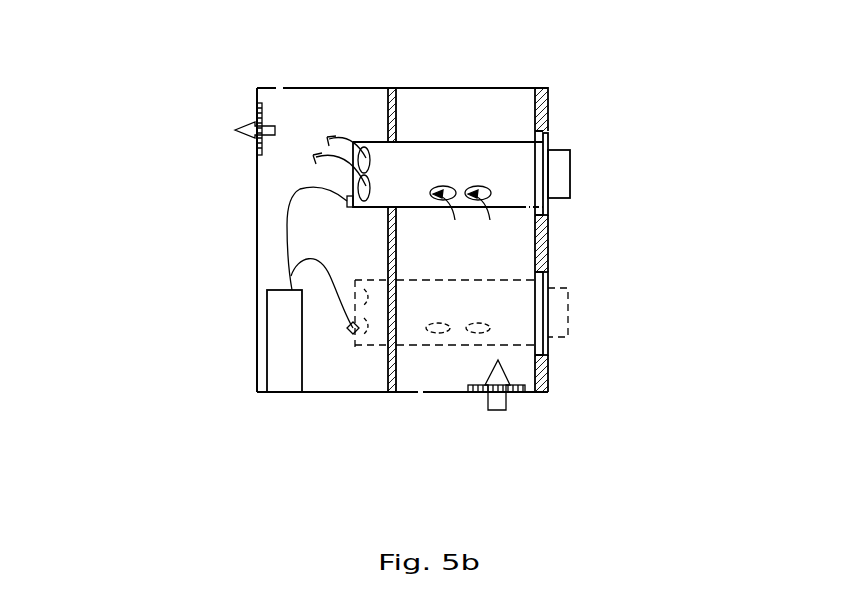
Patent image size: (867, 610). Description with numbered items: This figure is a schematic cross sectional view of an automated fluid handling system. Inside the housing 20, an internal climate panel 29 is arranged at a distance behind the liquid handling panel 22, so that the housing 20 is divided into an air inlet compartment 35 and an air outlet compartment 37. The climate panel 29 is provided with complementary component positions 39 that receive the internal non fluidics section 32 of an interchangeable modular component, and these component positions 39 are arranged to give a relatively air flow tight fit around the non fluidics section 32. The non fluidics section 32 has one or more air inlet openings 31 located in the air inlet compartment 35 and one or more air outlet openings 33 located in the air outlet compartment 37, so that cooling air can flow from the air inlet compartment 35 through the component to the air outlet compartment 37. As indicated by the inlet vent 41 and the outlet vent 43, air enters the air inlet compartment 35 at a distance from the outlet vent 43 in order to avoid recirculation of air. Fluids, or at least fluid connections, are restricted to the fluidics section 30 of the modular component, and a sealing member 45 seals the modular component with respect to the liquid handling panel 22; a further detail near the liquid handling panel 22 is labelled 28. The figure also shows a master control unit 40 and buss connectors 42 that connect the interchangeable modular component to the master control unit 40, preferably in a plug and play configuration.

The housing 20 is at (476, 76).
The liquid handling panel 22 is at (562, 101).
The hinge 28 is at (567, 211).
The internal climate panel 29 is at (377, 104).
The fluidics section 30 is at (583, 157).
The air inlet openings 31 is at (511, 202).
The internal non fluidics section 32 is at (424, 148).
The air outlet openings 33 is at (344, 169).
The air inlet compartment 35 is at (428, 385).
The air outlet compartment 37 is at (276, 95).
The complementary component positions 39 is at (370, 368).
The master control unit 40 is at (267, 378).
The inlet vent 41 is at (520, 413).
The buss connectors 42 is at (266, 251).
The outlet vent 43 is at (232, 117).
The sealing member 45 is at (562, 124).